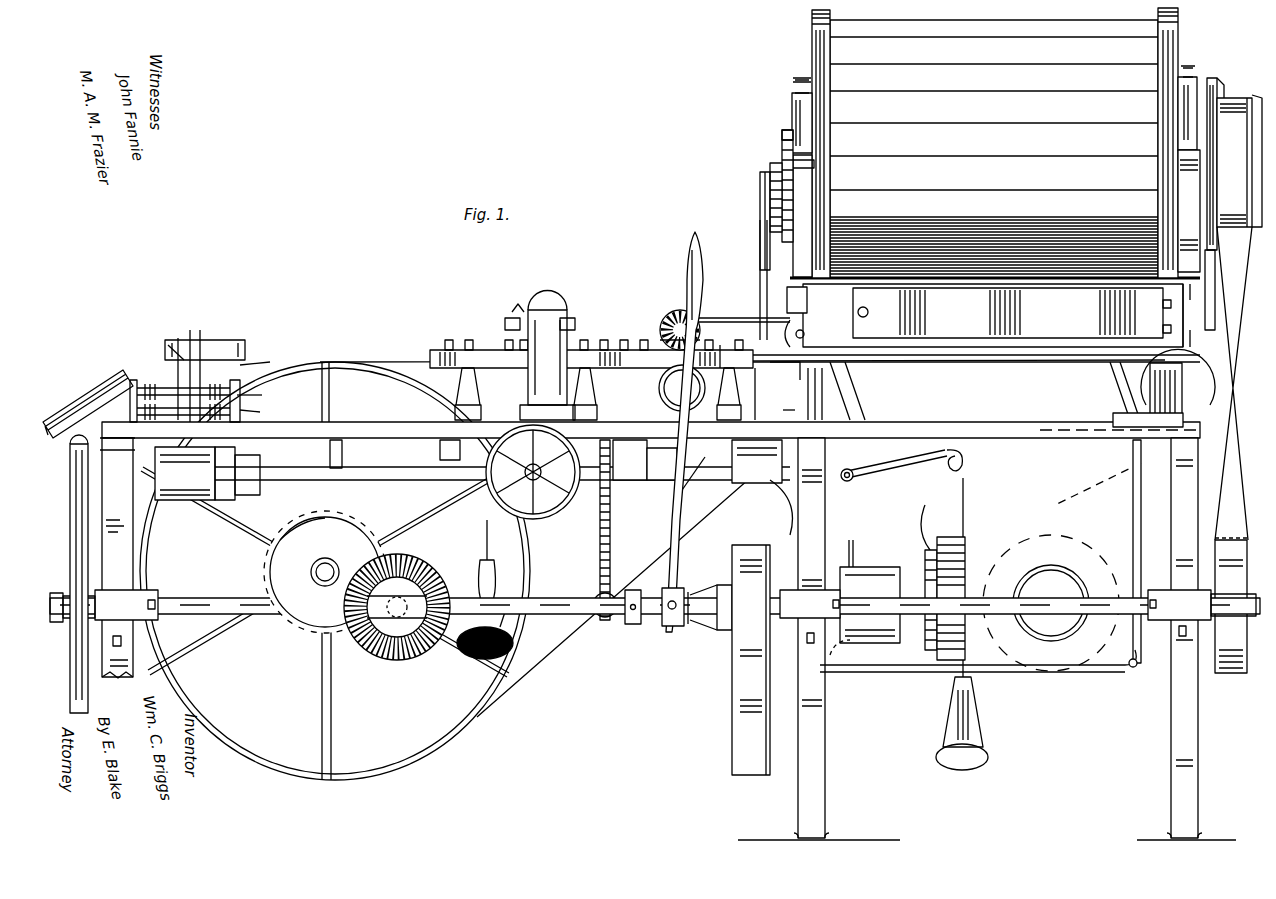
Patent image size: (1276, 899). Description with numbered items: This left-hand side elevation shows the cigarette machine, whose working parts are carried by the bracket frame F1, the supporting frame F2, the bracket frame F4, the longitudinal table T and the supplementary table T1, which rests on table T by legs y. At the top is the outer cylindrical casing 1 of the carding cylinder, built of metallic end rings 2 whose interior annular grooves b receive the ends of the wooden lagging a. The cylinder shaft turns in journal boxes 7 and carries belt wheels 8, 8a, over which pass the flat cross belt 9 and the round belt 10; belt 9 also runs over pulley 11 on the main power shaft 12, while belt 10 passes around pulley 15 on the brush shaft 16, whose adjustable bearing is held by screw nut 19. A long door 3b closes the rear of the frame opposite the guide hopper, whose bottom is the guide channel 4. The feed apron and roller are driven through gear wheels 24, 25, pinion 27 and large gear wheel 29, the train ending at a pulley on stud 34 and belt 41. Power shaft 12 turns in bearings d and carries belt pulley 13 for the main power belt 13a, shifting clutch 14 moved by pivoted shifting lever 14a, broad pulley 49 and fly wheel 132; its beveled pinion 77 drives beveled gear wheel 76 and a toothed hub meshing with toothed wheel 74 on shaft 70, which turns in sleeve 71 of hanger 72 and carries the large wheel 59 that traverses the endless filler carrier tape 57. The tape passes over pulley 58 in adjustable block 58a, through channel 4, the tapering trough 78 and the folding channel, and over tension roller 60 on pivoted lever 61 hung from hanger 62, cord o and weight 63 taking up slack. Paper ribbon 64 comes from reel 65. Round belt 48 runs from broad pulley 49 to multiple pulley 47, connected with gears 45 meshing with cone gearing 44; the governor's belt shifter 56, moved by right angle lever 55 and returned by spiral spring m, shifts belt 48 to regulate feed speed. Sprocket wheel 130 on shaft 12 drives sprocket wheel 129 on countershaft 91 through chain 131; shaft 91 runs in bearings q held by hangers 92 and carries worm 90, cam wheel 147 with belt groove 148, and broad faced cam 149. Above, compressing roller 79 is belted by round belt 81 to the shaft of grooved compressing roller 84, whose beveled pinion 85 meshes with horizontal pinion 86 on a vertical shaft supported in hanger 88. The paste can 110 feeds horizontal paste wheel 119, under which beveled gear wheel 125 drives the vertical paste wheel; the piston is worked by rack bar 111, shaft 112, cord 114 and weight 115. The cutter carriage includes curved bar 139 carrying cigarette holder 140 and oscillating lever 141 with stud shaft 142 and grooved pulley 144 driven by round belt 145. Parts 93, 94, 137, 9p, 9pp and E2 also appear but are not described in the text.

The outer cylindrical casing 1 is at (992, 143).
The metallic end rings 2 is at (1160, 175).
The wooden lagging a is at (988, 82).
The journal boxes 7 is at (814, 150).
The gear wheel 24 is at (803, 174).
The gear wheel 25 is at (782, 134).
The pinion 27 is at (805, 216).
The large gear wheel 29 is at (780, 163).
The stud 34 is at (762, 194).
The round belt 10 is at (1211, 78).
The flat cross belt 9 is at (1233, 319).
The belt wheel 8 is at (1252, 152).
The belt wheel 8a is at (1230, 73).
The pulley 11 is at (1245, 673).
The long door 3b is at (993, 315).
The shaft 16 is at (1163, 320).
The pulley 15 is at (1204, 324).
The screw nut 19 is at (808, 305).
The compressing roller 79 is at (810, 331).
The bracket frame F1 is at (790, 270).
The supplementary table T1 is at (815, 367).
The longitudinal table T is at (651, 417).
The legs y is at (593, 394).
The paste can 110 is at (547, 356).
The horizontal paste wheel 119 is at (508, 328).
The beveled gear wheel 125 is at (559, 317).
The wheel 93 is at (659, 388).
The compressing roller 84 is at (677, 319).
The beveled pinion 85 is at (660, 333).
The horizontal pinion 86 is at (730, 344).
The round belt 81 is at (740, 308).
The support 94 is at (751, 394).
The tapering curved trough 78 is at (785, 375).
The belt 41 is at (785, 405).
The guide channel 4 is at (974, 391).
The pulley 58 is at (1178, 384).
The adjustable block 58a is at (1135, 413).
The hanger 62 is at (1027, 432).
The endless filler carrier tape 57 is at (742, 526).
The large wheel 59 is at (368, 372).
The chute 9' 9p is at (88, 388).
The arm 9'' 9pp is at (242, 410).
The oscillating lever 141 is at (133, 380).
The tubular cigarette holder 140 is at (207, 340).
The round belt 145 is at (204, 368).
The short stud shaft 142 is at (178, 370).
The grooved pulley 144 is at (175, 350).
The curved bar 139 is at (243, 368).
The arm 137 is at (240, 393).
The countershaft 91 is at (410, 470).
The broad faced cam 149 is at (170, 500).
The grooved pulley 148 is at (222, 500).
The cam wheel 147 is at (250, 490).
The hanger 72 is at (342, 459).
The weight 115 is at (445, 672).
The rack bar 111 is at (533, 484).
The cord 114 is at (460, 530).
The shaft 112 is at (488, 560).
The sprocket wheel 129 is at (605, 521).
The sprocket chain 131 is at (580, 545).
The sprocket wheel 130 is at (605, 620).
The hangers 92 is at (635, 480).
The worm 90 is at (660, 480).
The hanger 88 is at (698, 482).
The tension roller 60 is at (781, 507).
The pivoted lever 61 is at (904, 472).
The long sleeve or journal 71 is at (839, 485).
The cord o is at (971, 577).
The weight 63 is at (955, 720).
The set of gears 45 is at (929, 518).
The round belt 48 is at (854, 541).
The broad pulley 49 is at (870, 605).
The multiple pulley 47 is at (895, 545).
The cone gearing 44 is at (942, 590).
The reel 65 is at (1051, 603).
The paper ribbon 64 is at (1095, 486).
The spiral spring m is at (1117, 490).
The right angle lever 55 is at (1146, 551).
The belt shifter 56 is at (978, 667).
The interior annular grooves b is at (1143, 660).
The bracket frame F4 is at (905, 687).
The main power shaft 12 is at (212, 598).
The bearings d is at (653, 606).
The shaft 70 is at (330, 565).
The toothed wheel 74 is at (268, 566).
The beveled pinion 77 is at (394, 614).
The beveled gear wheel 76 is at (444, 560).
The fly wheel 132 is at (62, 574).
The leg E2 is at (161, 558).
The supporting frame F2 is at (827, 748).
The pivoted shifting lever 14a is at (681, 432).
The shifting clutch 14 is at (654, 620).
The belt pulley 13 is at (728, 665).
The main power belt 13a is at (708, 725).
The bearings q is at (495, 505).